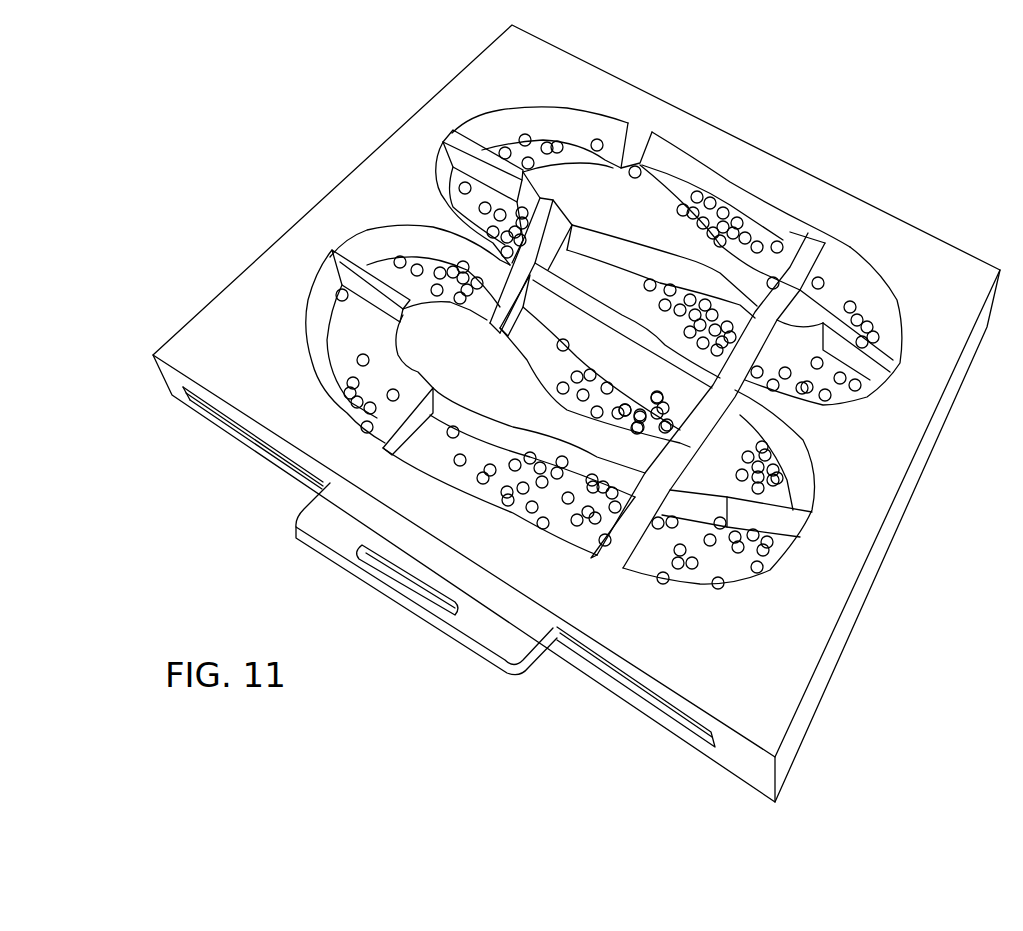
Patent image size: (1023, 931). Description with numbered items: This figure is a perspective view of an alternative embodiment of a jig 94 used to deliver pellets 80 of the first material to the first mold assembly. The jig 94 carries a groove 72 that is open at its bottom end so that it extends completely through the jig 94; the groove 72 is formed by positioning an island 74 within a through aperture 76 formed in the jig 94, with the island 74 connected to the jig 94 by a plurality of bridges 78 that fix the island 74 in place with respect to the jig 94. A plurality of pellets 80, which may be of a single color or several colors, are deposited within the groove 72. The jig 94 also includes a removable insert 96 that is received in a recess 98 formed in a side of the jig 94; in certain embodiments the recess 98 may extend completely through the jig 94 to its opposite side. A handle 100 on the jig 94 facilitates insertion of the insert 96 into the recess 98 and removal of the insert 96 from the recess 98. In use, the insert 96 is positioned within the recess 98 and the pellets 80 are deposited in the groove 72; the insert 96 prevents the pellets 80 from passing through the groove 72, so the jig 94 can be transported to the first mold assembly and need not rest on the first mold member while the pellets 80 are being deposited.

The groove 72 is at (338, 368).
The island 74 is at (471, 372).
The through aperture 76 is at (408, 238).
The bridges 78 is at (485, 310).
The pellets 80 is at (562, 360).
The jig 94 is at (925, 457).
The removable insert 96 is at (338, 350).
The recess 98 is at (667, 708).
The handle 100 is at (487, 643).